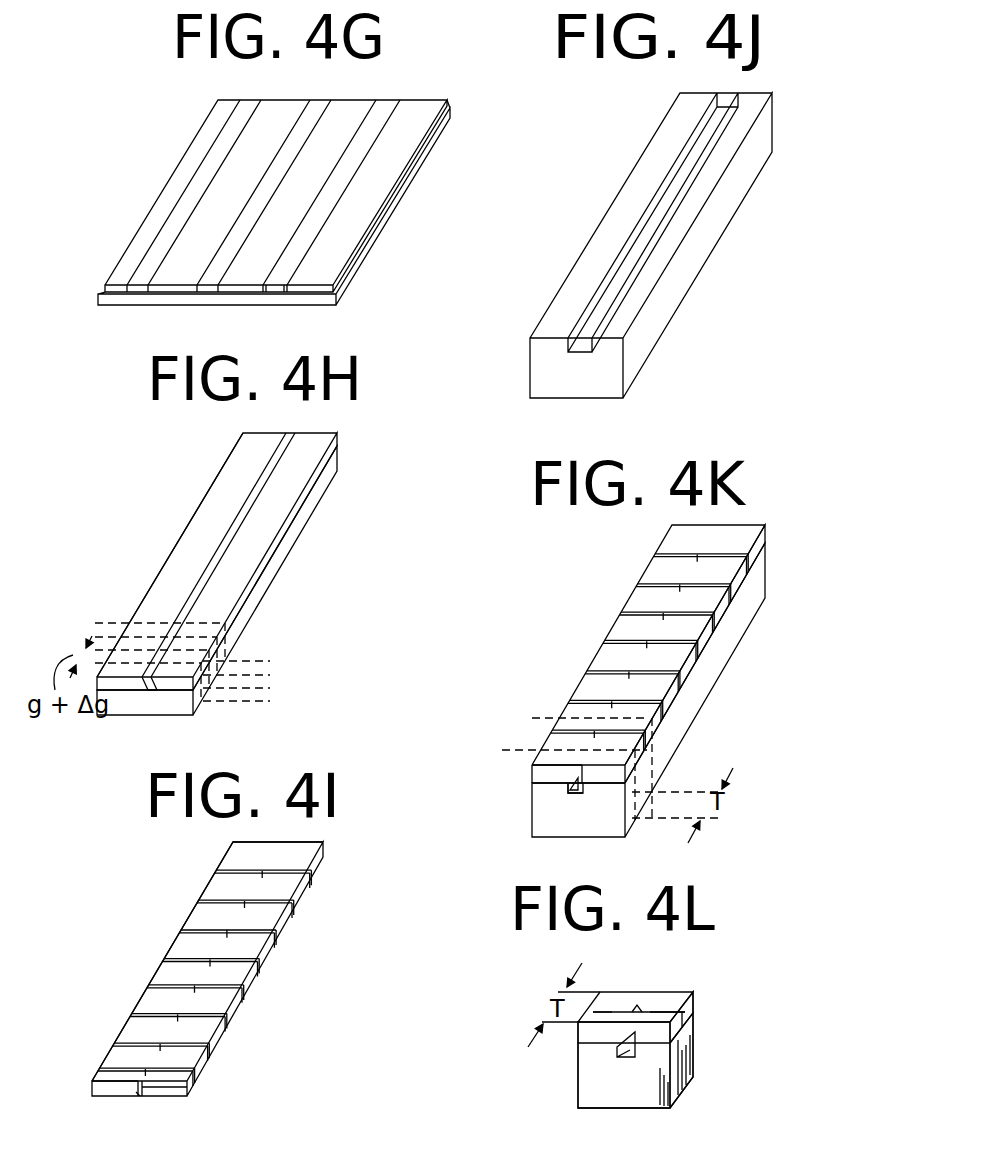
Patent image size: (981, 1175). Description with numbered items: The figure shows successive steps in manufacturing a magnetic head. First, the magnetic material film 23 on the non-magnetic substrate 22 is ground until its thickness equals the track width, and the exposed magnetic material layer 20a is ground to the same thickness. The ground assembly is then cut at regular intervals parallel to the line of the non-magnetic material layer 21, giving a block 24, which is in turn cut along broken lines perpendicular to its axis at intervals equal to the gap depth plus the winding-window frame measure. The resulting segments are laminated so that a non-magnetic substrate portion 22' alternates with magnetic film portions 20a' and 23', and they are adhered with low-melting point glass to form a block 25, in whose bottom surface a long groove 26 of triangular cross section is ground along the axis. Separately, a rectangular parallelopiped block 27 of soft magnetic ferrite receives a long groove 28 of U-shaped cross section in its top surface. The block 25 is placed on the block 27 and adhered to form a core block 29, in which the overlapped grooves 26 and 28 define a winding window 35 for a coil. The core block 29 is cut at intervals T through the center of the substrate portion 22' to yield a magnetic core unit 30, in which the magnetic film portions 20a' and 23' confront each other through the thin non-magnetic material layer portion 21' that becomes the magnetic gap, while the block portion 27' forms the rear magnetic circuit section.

In FIG. 4G, the magnetic material layer 20a is at (307, 221).
In FIG. 4H, the magnetic material layer 20a is at (170, 555).
In FIG. 4G, the non-magnetic material layer 21 is at (263, 221).
In FIG. 4H, the non-magnetic material layer 21 is at (257, 544).
In FIG. 4G, the non-magnetic substrate 22 is at (280, 202).
In FIG. 4H, the non-magnetic substrate 22 is at (217, 601).
In FIG. 4G, the magnetic material film 23 is at (299, 196).
In FIG. 4H, the magnetic material film 23 is at (231, 561).
In FIG. 4H, the block 24 is at (335, 500).
In FIG. 4I, the block 25 is at (310, 902).
In FIG. 4I, the long groove 26 is at (135, 1096).
In FIG. 4K, the long groove 26 is at (568, 790).
In FIG. 4J, the rectangular parallelopiped block 27 is at (653, 245).
In FIG. 4K, the rectangular parallelopiped block 27 is at (653, 690).
In FIG. 4J, the long groove 28 is at (583, 350).
In FIG. 4K, the long groove 28 is at (575, 784).
In FIG. 4K, the core block 29 is at (790, 667).
In FIG. 4L, the magnetic core unit 30 is at (693, 1078).
In FIG. 4K, the winding window 35 is at (472, 776).
In FIG. 4L, the winding window 35 is at (628, 1056).
In FIG. 4I, the magnetic film portion 20a' is at (85, 1102).
In FIG. 4K, the magnetic film portion 20a' is at (520, 758).
In FIG. 4L, the magnetic film portion 20a' is at (623, 980).
In FIG. 4I, the non-magnetic material layer portion 21' is at (89, 1073).
In FIG. 4K, the non-magnetic material layer portion 21' is at (533, 732).
In FIG. 4L, the non-magnetic material layer portion 21' is at (667, 980).
In FIG. 4I, the non-magnetic substrate portion 22' is at (190, 969).
In FIG. 4K, the non-magnetic substrate portion 22' is at (646, 654).
In FIG. 4L, the non-magnetic substrate portion 22' is at (674, 1017).
In FIG. 4I, the magnetic film portion 23' is at (205, 987).
In FIG. 4K, the magnetic film portion 23' is at (650, 713).
In FIG. 4L, the magnetic film portion 23' is at (707, 980).
In FIG. 4L, the block portion 27' is at (604, 1061).